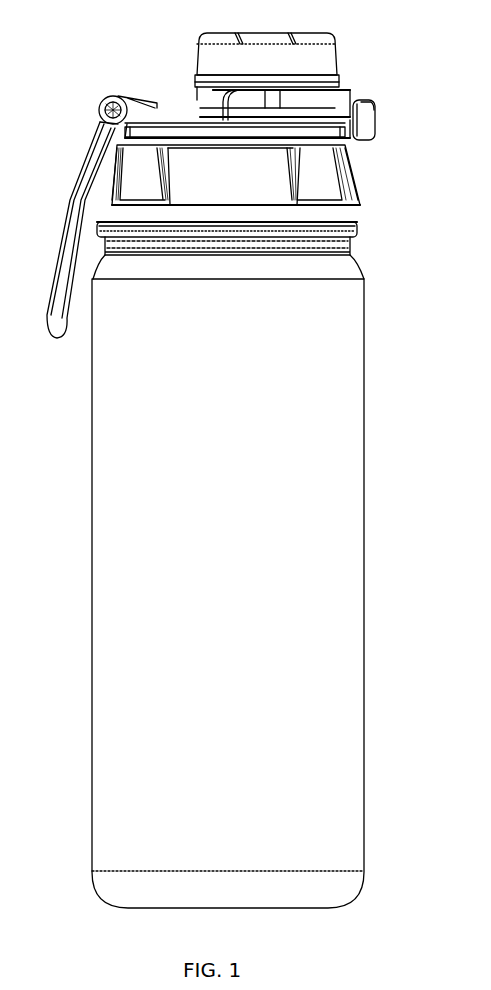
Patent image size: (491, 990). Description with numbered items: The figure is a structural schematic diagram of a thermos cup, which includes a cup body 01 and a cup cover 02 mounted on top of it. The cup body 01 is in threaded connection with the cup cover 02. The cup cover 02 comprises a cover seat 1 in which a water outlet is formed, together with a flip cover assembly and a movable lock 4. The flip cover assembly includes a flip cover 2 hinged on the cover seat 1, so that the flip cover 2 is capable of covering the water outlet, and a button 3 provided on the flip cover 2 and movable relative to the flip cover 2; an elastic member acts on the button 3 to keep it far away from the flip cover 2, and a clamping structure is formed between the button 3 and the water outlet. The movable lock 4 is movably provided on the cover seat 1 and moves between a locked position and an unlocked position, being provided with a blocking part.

The cup body 01 is at (92, 528).
The cup cover 02 is at (251, 176).
The cover seat 1 is at (357, 200).
The flip cover 2 is at (330, 72).
The button 3 is at (357, 92).
The movable lock 4 is at (378, 115).